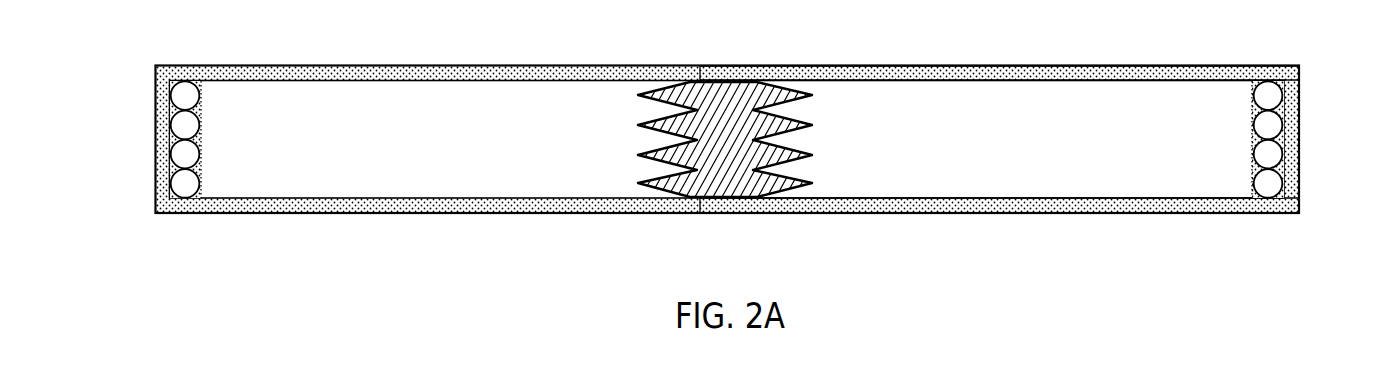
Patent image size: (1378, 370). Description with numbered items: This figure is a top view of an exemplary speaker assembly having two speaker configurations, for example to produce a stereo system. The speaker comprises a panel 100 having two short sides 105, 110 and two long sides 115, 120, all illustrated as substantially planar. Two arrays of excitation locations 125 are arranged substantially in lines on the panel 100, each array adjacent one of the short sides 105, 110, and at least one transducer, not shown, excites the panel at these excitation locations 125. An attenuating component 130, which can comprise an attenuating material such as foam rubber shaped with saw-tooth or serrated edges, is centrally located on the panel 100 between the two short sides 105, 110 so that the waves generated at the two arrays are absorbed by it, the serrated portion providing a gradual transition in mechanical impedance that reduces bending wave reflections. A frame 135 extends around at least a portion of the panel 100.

The panel 100 is at (1002, 173).
The first short side 105 is at (158, 108).
The second short side 110 is at (1282, 107).
The first long side 115 is at (392, 80).
The second long side 120 is at (1038, 82).
The excitation locations 125 is at (186, 189).
The attenuating component 130 is at (725, 182).
The frame 135 is at (1138, 217).